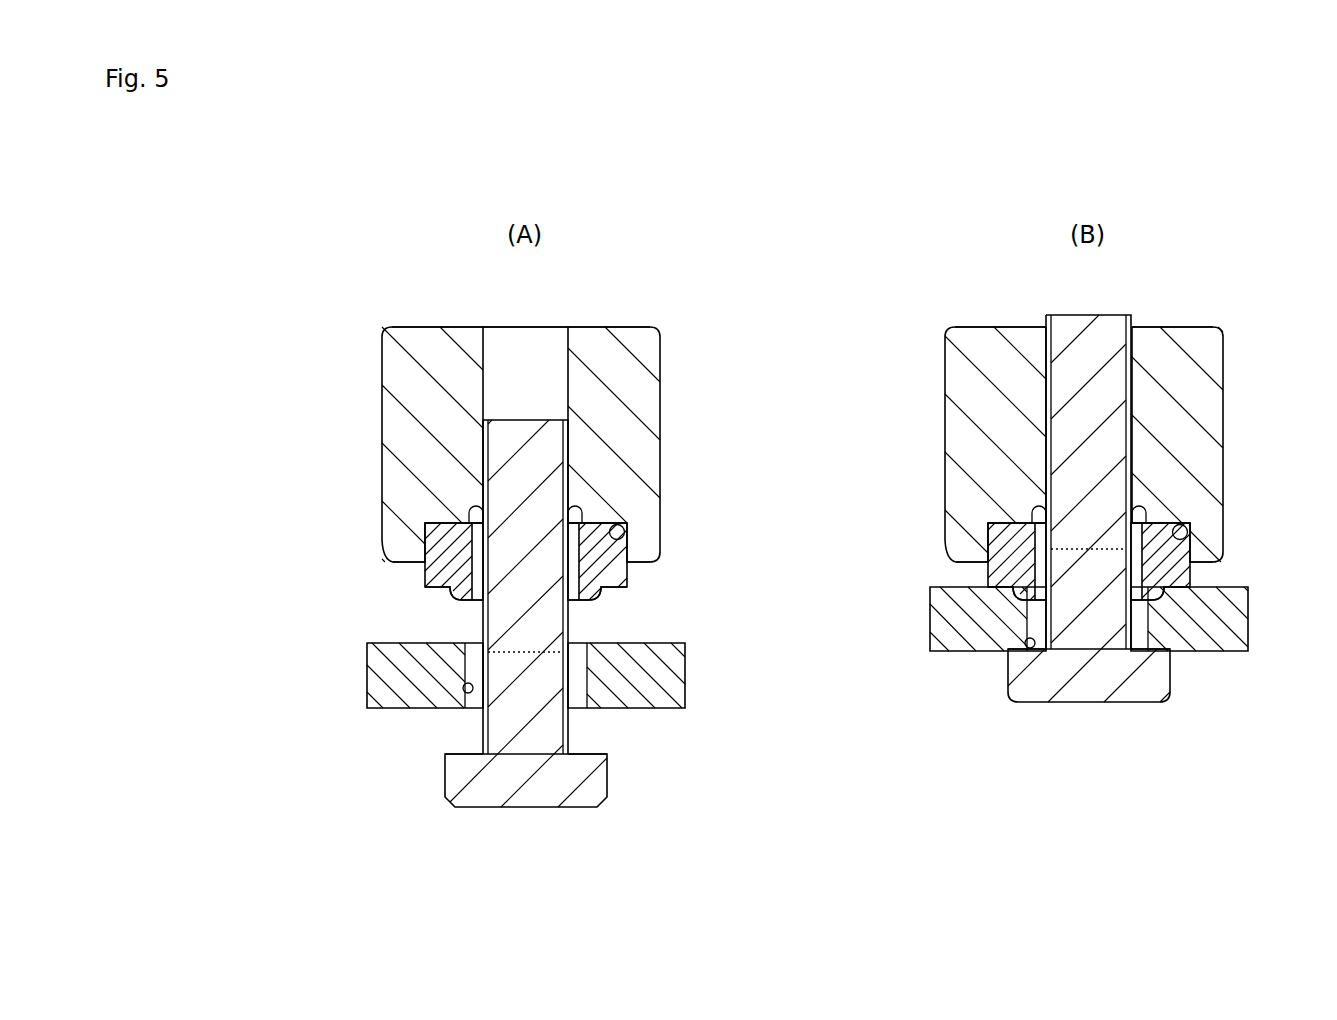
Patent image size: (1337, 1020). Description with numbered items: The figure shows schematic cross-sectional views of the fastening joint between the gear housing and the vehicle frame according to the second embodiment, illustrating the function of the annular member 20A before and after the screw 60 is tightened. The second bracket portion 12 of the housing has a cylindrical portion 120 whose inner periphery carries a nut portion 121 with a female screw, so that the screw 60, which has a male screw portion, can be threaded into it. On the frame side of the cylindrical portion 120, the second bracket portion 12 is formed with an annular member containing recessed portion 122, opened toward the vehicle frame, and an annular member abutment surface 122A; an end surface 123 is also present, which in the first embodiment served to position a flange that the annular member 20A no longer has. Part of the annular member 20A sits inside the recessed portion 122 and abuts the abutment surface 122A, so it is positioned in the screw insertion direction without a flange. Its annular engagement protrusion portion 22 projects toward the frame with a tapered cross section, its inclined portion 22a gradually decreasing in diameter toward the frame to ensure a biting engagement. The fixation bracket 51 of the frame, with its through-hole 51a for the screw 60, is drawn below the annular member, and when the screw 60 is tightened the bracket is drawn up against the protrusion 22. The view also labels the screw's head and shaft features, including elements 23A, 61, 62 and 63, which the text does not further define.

The second bracket portion 12 is at (628, 318).
The cylindrical portion 120 is at (417, 343).
The nut portion 121 is at (566, 352).
The annular member containing recessed portion 122 is at (620, 513).
The annular member abutment surface 122A is at (427, 533).
The end surface 123 is at (393, 563).
The protrusion 23A is at (471, 512).
The annular member 20A is at (672, 569).
The engagement protrusion portion 22 is at (455, 604).
The inclined portion 22a is at (600, 597).
The fixation bracket 51 is at (665, 680).
The through-hole 51a is at (463, 688).
The screw 60 is at (486, 830).
The bolt head 61 is at (532, 808).
The bolt head upper surface 62 is at (568, 733).
The bolt shaft 63 is at (568, 497).